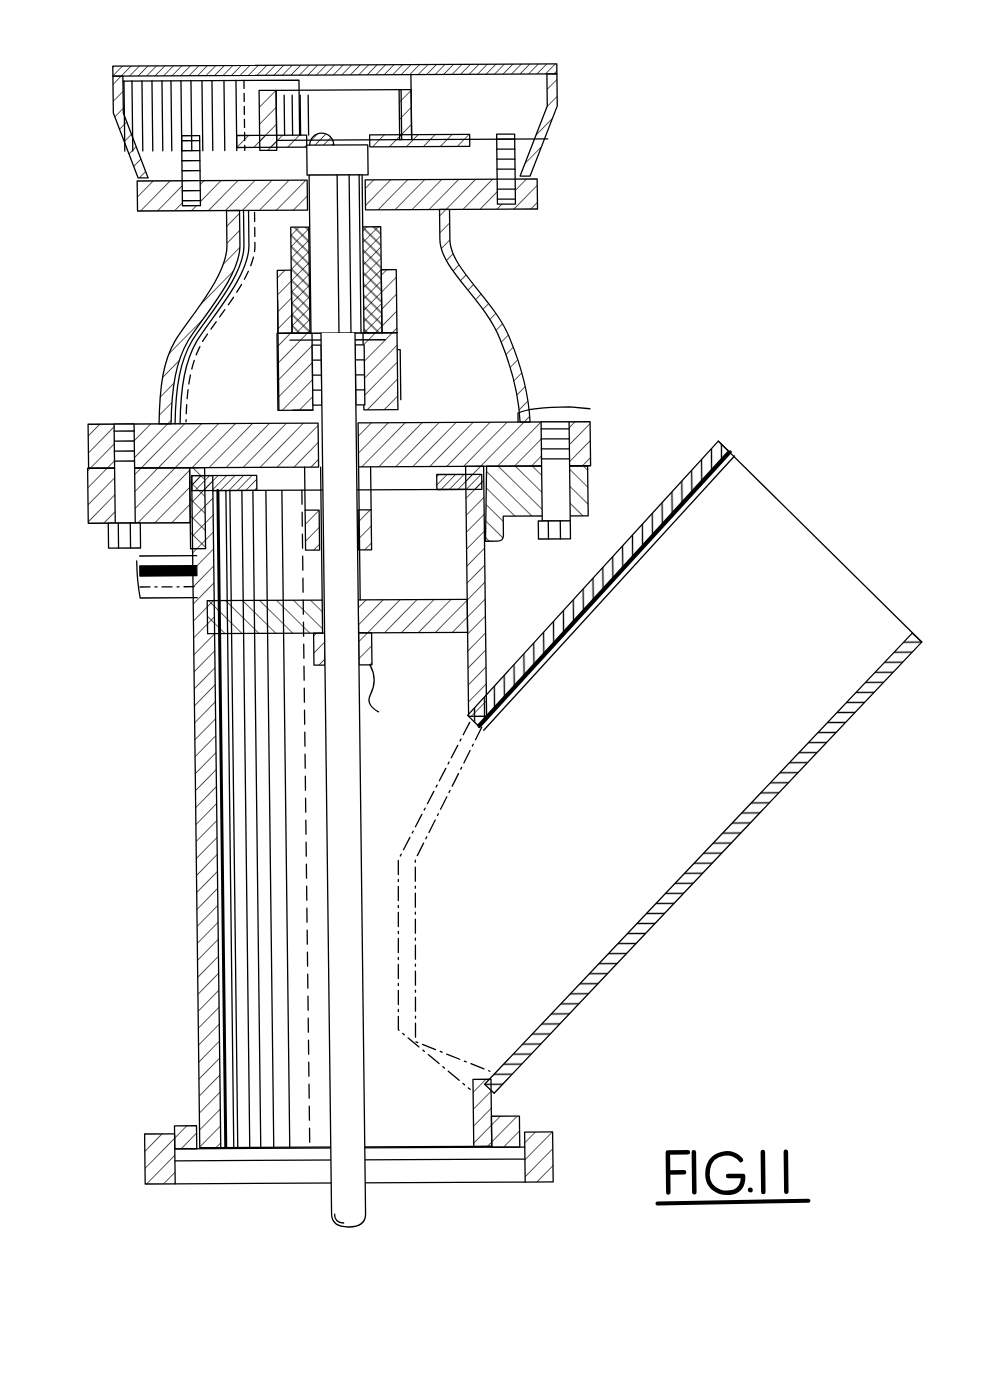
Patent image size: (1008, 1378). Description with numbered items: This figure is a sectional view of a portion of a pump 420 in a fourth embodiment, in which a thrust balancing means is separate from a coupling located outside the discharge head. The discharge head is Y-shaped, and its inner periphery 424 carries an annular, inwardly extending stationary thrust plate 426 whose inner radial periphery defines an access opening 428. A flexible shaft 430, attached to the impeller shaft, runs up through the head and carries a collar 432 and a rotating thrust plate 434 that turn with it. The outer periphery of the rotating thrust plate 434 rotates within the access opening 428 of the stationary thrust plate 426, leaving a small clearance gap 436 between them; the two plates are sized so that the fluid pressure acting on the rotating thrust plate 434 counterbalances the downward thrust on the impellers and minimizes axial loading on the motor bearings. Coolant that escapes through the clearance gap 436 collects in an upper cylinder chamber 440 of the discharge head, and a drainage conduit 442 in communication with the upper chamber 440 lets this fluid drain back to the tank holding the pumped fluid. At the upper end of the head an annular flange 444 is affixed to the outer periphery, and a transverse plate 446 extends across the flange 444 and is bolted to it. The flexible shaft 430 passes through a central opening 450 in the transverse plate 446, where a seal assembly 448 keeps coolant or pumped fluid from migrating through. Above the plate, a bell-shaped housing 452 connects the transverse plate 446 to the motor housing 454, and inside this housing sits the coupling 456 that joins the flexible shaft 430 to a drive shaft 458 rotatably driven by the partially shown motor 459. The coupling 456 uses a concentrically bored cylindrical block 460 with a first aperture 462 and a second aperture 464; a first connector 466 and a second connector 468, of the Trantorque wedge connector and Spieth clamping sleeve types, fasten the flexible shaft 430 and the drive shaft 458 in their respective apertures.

The pump 420 is at (678, 962).
The inner periphery 424 is at (215, 773).
The stationary thrust plate 426 is at (219, 660).
The access opening 428 is at (212, 620).
The flexible shaft 430 is at (354, 840).
The collar 432 is at (405, 703).
The rotating thrust plate 434 is at (228, 705).
The clearance gap 436 is at (437, 598).
The upper cylinder chamber 440 is at (250, 510).
The drainage conduit 442 is at (149, 582).
The annular flange 444 is at (592, 433).
The transverse plate 446 is at (549, 412).
The seal assembly 448 is at (376, 532).
The central opening 450 is at (290, 378).
The bell-shaped housing 452 is at (500, 327).
The motor housing 454 is at (566, 105).
The coupling 456 is at (386, 345).
The drive shaft 458 is at (357, 200).
The motor 459 is at (392, 132).
The cylindrical block 460 is at (402, 393).
The first aperture 462 is at (402, 297).
The second aperture 464 is at (402, 370).
The first connector 466 is at (387, 250).
The second connector 468 is at (526, 413).